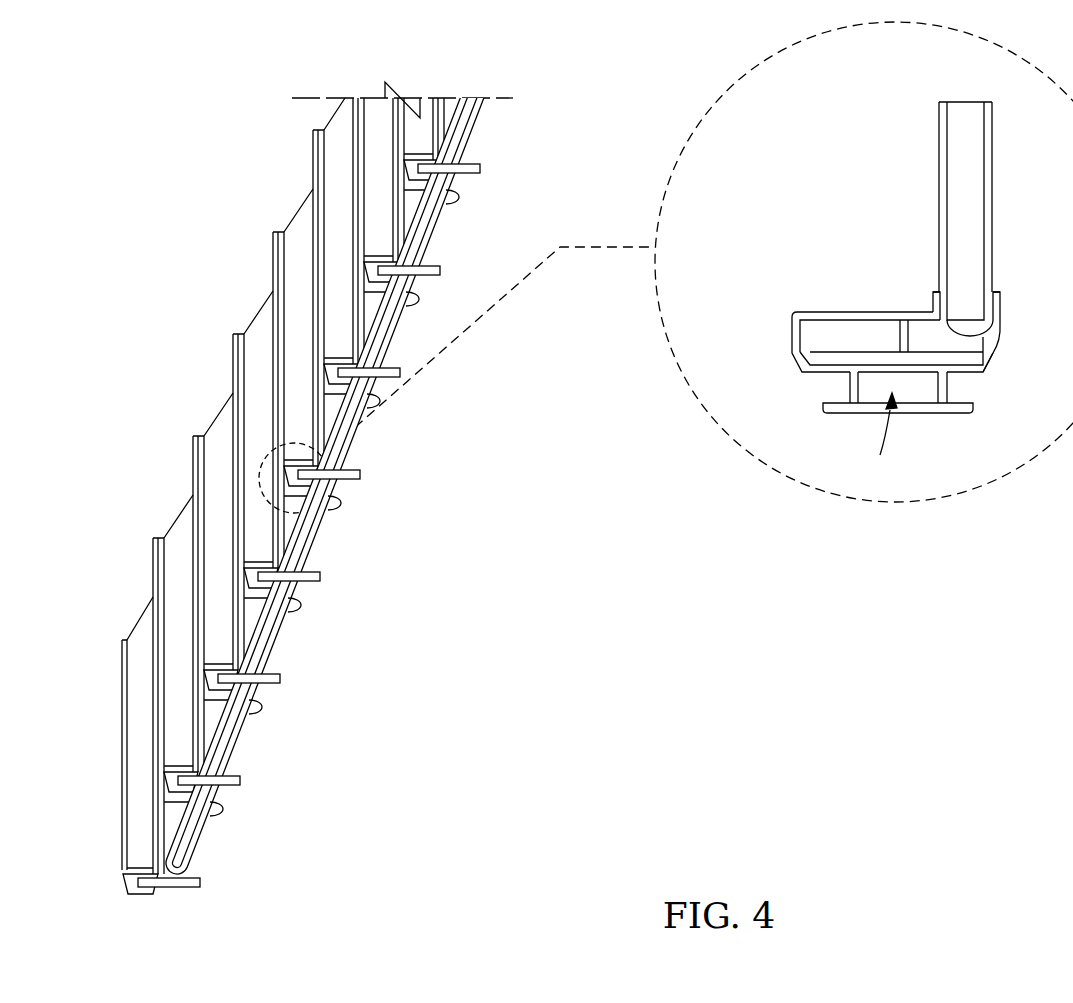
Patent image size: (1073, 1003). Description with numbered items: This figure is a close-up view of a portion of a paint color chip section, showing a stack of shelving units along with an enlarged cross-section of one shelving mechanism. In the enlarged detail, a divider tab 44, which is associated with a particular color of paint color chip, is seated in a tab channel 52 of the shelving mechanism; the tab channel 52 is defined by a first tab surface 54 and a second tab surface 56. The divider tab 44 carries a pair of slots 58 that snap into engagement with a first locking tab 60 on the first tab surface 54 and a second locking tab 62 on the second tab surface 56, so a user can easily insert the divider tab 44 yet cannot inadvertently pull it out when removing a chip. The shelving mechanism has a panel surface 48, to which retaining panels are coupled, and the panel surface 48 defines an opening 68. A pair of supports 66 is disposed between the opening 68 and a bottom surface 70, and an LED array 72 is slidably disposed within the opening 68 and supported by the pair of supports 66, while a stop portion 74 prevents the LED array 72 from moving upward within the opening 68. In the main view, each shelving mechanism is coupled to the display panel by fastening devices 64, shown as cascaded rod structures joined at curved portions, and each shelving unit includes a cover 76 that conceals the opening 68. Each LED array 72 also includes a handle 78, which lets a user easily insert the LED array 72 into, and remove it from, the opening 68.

The divider tab 44 is at (965, 101).
The panel surface 48 is at (826, 311).
The tab channel 52 is at (987, 337).
The first tab surface 54 is at (930, 292).
The second tab surface 56 is at (1003, 303).
The slots 58 is at (940, 292).
The first locking tab 60 is at (927, 311).
The second locking tab 62 is at (983, 309).
The fastening devices 64 is at (224, 809).
The pair of supports 66 is at (827, 373).
The opening 68 is at (880, 439).
The bottom surface 70 is at (925, 414).
The LED array 72 is at (808, 355).
The stop portion 74 is at (893, 338).
The cover 76 is at (330, 513).
The handle 78 is at (200, 882).